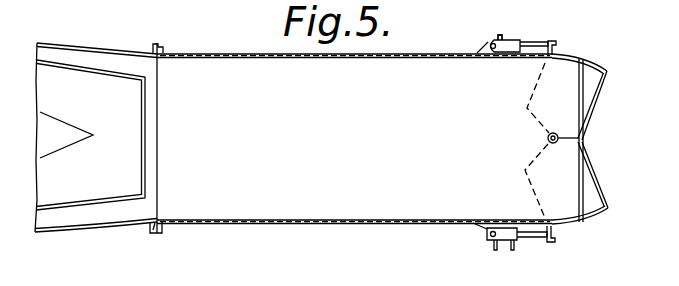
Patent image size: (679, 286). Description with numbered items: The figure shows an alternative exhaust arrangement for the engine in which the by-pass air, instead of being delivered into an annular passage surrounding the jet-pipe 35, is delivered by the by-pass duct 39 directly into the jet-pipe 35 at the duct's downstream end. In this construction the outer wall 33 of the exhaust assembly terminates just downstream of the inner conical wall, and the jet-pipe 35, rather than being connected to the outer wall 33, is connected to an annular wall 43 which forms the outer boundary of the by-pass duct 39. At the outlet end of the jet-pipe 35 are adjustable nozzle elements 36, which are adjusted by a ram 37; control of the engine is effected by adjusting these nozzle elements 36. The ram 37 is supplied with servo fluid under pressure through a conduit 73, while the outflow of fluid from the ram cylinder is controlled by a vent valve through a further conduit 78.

The outer wall 33 is at (100, 76).
The jet-pipe 35 is at (227, 53).
The adjustable nozzle elements 36 is at (591, 56).
The ram 37 is at (528, 43).
The by-pass duct 39 is at (70, 52).
The annular wall 43 is at (92, 48).
The conduit 73 is at (517, 40).
The conduit 78 is at (498, 34).